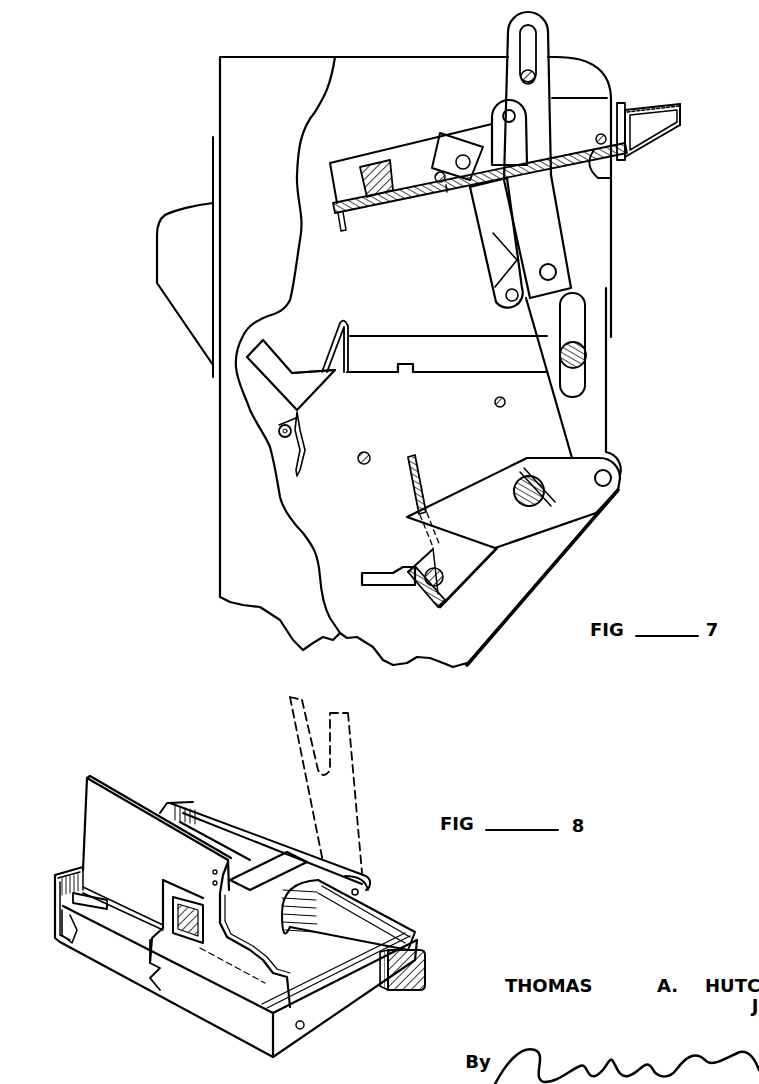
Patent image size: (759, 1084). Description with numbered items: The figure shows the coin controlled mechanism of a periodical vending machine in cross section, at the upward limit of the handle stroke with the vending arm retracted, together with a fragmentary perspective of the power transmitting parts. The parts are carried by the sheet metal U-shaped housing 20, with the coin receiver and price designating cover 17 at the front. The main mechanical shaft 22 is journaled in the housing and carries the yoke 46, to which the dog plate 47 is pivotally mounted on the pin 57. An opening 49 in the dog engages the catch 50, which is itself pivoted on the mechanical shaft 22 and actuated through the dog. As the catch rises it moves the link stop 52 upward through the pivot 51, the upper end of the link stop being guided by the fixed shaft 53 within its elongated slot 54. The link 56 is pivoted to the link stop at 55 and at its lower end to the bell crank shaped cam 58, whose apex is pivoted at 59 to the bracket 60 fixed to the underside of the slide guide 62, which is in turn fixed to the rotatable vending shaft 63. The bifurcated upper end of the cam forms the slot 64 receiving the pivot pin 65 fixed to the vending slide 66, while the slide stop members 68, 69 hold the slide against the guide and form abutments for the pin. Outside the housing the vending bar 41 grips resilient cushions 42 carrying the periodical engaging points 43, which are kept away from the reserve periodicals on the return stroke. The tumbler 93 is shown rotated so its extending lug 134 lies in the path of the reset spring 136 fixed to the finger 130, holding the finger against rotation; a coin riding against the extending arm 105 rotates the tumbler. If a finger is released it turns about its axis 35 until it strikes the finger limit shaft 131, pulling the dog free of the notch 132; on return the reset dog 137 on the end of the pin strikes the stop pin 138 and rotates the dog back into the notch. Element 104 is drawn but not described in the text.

In FIG. 7, the coin receiver and price designating cover 17 is at (178, 255).
In FIG. 7, the housing 20 is at (212, 473).
In FIG. 7, the mechanical shaft 22 is at (523, 507).
In FIG. 8, the mechanical shaft 22 is at (365, 927).
In FIG. 7, the axis 35 is at (582, 360).
In FIG. 7, the vending bar 41 is at (628, 106).
In FIG. 7, the resilient cushions 42 is at (650, 120).
In FIG. 7, the periodical engaging points 43 is at (681, 108).
In FIG. 7, the yoke 46 is at (528, 472).
In FIG. 8, the yoke 46 is at (208, 1019).
In FIG. 7, the dog plate 47 is at (416, 466).
In FIG. 8, the dog plate 47 is at (104, 849).
In FIG. 8, the opening 49 is at (185, 900).
In FIG. 7, the catch 50 is at (456, 528).
In FIG. 8, the catch 50 is at (227, 927).
In FIG. 7, the pivot 51 is at (612, 478).
In FIG. 8, the pivot 51 is at (362, 888).
In FIG. 7, the link stop 52 is at (597, 381).
In FIG. 8, the link stop 52 is at (360, 812).
In FIG. 7, the fixed shaft 53 is at (522, 74).
In FIG. 7, the elongated slot 54 is at (537, 42).
In FIG. 7, the pivot 55 is at (506, 110).
In FIG. 7, the link 56 is at (492, 118).
In FIG. 7, the pin 57 is at (428, 592).
In FIG. 8, the pin 57 is at (86, 915).
In FIG. 7, the bell crank shaped cam 58 is at (476, 211).
In FIG. 7, the pivot 59 is at (557, 271).
In FIG. 7, the bracket 60 is at (553, 155).
In FIG. 7, the slide guide 62 is at (401, 171).
In FIG. 7, the vending shaft 63 is at (368, 162).
In FIG. 7, the slot 64 is at (460, 153).
In FIG. 7, the pivot pin 65 is at (439, 171).
In FIG. 7, the vending slide 66 is at (609, 174).
In FIG. 7, the slide stop member 68 is at (447, 188).
In FIG. 7, the slide stop member 69 is at (597, 133).
In FIG. 7, the tumbler 93 is at (270, 367).
In FIG. 7, the pivot pin 104 is at (282, 436).
In FIG. 7, the extending arm 105 is at (307, 467).
In FIG. 7, the finger 130 is at (442, 366).
In FIG. 7, the finger limit shaft 131 is at (497, 408).
In FIG. 7, the notch 132 is at (410, 375).
In FIG. 7, the extending lug 134 is at (324, 381).
In FIG. 7, the reset spring 136 is at (331, 355).
In FIG. 7, the reset dog 137 is at (386, 580).
In FIG. 7, the stop pin 138 is at (360, 466).